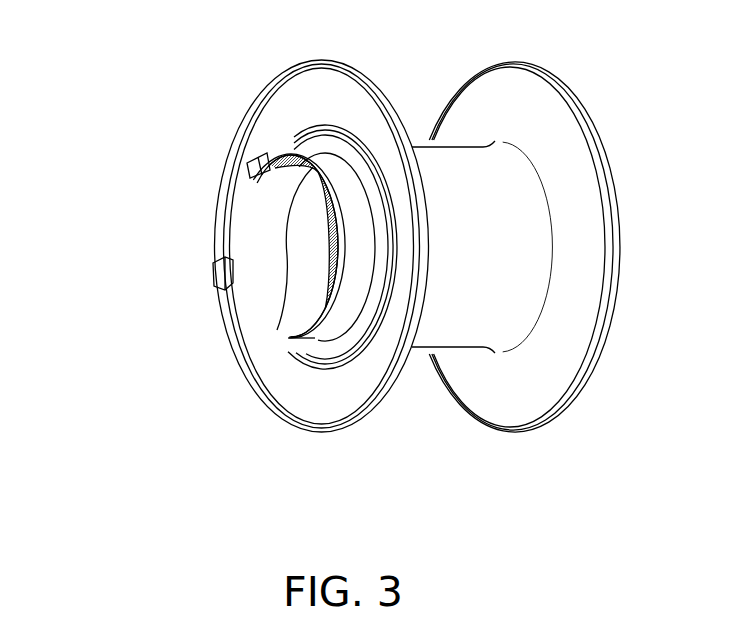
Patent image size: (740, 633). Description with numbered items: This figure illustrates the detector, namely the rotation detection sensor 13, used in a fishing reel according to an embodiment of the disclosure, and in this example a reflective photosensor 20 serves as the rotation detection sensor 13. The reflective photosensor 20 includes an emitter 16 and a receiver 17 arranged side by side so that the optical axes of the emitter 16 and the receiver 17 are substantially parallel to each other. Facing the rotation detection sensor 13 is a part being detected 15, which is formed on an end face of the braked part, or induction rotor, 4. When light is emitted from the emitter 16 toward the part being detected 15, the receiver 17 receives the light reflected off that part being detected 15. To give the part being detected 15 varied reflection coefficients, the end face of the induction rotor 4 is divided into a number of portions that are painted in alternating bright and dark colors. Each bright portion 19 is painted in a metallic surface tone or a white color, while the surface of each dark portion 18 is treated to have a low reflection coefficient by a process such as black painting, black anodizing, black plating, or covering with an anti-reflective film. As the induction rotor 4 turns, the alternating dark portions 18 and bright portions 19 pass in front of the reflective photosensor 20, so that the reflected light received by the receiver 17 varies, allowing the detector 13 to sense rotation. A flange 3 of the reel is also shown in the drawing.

The flange 3 is at (335, 97).
The braked part (induction rotor) 4 is at (322, 328).
The detector (rotation detection sensor) 13 is at (203, 181).
The part being detected 15 is at (220, 279).
The emitter 16 is at (247, 163).
The receiver 17 is at (215, 265).
The dark portion 18 is at (330, 257).
The bright portion 19 is at (268, 327).
The reflective photosensor 20 is at (205, 204).